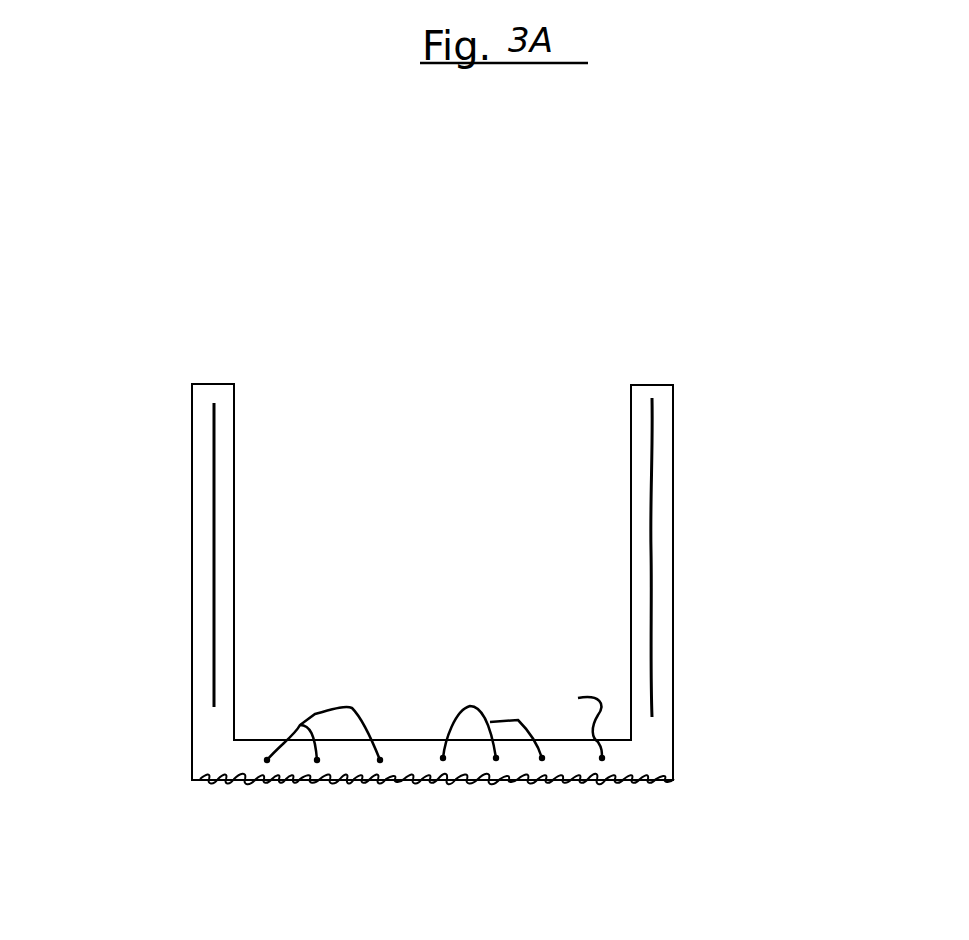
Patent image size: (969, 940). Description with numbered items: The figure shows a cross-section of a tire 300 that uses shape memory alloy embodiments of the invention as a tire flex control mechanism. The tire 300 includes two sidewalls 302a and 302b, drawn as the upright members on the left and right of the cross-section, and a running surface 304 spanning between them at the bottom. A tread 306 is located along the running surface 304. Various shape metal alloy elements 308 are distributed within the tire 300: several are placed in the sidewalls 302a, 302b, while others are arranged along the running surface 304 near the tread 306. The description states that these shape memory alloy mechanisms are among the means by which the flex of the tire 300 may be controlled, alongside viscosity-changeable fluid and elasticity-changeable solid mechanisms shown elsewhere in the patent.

The tire 300 is at (852, 862).
The sidewall 302a is at (673, 438).
The sidewall 302b is at (192, 420).
The running surface 304 is at (230, 762).
The tread 306 is at (604, 786).
The shape metal alloy elements 308 is at (214, 470).